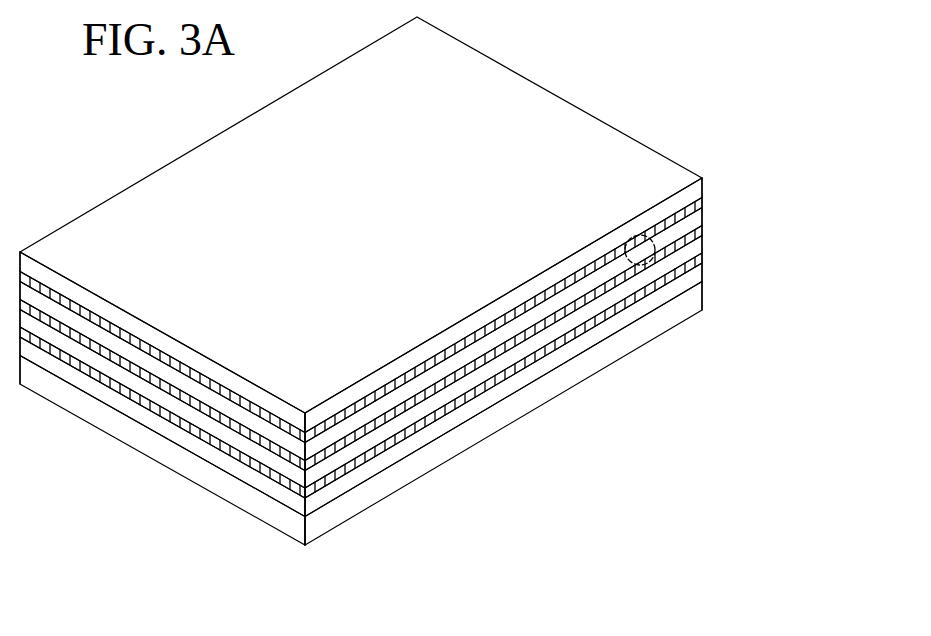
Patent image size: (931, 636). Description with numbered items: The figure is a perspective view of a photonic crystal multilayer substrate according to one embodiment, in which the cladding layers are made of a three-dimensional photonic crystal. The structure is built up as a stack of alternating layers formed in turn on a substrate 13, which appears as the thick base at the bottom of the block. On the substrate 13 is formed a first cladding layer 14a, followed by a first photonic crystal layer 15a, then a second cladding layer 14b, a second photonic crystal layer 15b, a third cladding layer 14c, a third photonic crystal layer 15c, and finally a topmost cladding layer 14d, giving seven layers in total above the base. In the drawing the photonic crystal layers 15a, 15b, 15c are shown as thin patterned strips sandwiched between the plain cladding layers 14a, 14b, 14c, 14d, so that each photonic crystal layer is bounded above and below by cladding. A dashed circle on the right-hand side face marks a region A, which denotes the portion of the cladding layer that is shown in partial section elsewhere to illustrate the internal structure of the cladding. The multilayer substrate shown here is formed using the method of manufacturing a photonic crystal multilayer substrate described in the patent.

The base substrate 13 is at (352, 505).
The cladding layer 14a is at (408, 450).
The cladding layer 14b is at (458, 388).
The cladding layer 14c is at (438, 372).
The cladding layer 14d is at (487, 315).
The photonic crystal layer 15a is at (232, 452).
The photonic crystal layer 15b is at (168, 387).
The photonic crystal layer 15c is at (105, 325).
The enlarged region A(A') A is at (654, 244).